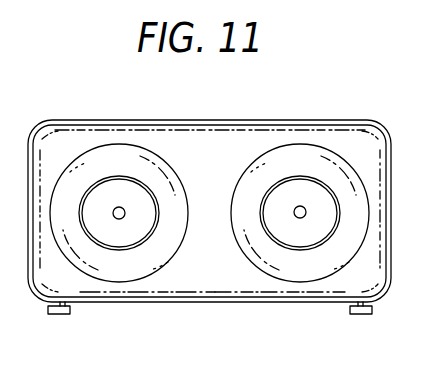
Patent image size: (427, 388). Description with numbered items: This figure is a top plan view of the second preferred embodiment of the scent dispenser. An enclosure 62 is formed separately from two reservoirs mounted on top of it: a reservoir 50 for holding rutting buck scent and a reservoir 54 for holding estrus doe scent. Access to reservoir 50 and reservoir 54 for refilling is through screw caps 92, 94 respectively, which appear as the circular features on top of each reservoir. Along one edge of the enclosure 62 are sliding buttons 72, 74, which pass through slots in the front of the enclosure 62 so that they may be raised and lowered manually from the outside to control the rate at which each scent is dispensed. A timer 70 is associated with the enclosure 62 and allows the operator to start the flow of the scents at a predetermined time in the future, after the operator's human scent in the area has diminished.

The reservoir 50 is at (84, 160).
The screw cap 92 is at (113, 183).
The screw cap 94 is at (298, 183).
The reservoir 54 is at (338, 163).
The sliding button 72 is at (63, 314).
The sliding button 74 is at (366, 314).
The enclosure 62 is at (143, 302).
The timer 70 is at (226, 303).